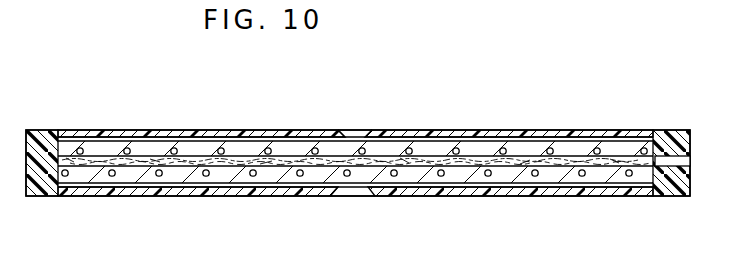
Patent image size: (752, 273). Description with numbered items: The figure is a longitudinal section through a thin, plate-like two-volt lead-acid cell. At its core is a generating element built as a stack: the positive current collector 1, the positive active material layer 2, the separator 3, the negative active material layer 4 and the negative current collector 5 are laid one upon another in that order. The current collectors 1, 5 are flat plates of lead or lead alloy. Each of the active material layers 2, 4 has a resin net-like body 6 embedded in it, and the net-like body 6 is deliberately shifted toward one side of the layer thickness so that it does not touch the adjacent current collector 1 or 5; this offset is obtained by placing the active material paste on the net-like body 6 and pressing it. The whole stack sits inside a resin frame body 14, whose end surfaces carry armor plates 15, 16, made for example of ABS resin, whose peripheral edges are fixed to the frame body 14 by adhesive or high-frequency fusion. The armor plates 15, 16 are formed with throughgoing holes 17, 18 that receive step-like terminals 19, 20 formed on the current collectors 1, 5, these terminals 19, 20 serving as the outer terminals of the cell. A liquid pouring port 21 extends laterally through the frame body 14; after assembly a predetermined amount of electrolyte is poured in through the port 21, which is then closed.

The positive current collector 1 is at (564, 186).
The positive active material layer 2 is at (472, 180).
The separator 3 is at (524, 156).
The negative active material layer 4 is at (564, 147).
The negative current collector 5 is at (468, 140).
The net-like body 6 is at (306, 136).
The frame body 14 is at (57, 133).
The armor plate 15 is at (175, 190).
The armor plate 16 is at (236, 131).
The throughgoing hole 17 is at (368, 196).
The throughgoing hole 18 is at (370, 131).
The step-like terminal 19 is at (340, 190).
The step-like terminal 20 is at (342, 137).
The liquid pouring port 21 is at (663, 163).